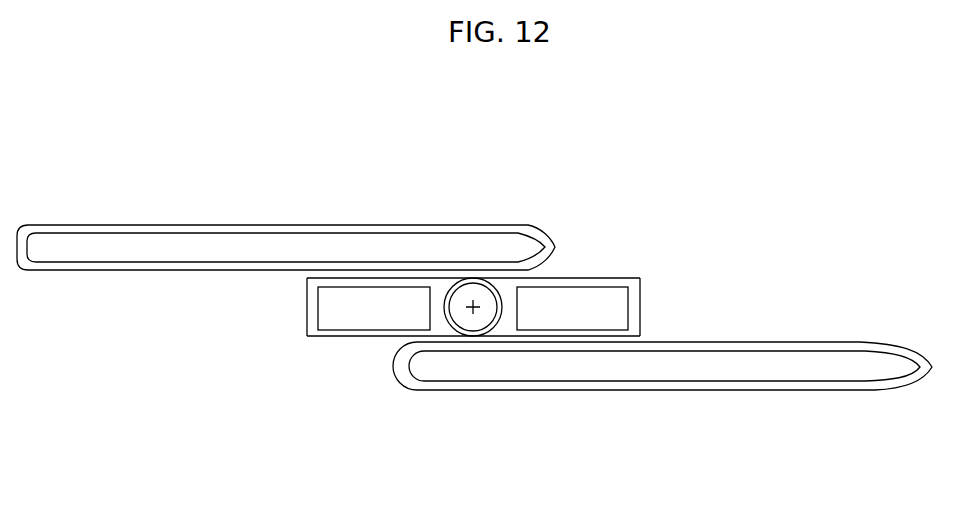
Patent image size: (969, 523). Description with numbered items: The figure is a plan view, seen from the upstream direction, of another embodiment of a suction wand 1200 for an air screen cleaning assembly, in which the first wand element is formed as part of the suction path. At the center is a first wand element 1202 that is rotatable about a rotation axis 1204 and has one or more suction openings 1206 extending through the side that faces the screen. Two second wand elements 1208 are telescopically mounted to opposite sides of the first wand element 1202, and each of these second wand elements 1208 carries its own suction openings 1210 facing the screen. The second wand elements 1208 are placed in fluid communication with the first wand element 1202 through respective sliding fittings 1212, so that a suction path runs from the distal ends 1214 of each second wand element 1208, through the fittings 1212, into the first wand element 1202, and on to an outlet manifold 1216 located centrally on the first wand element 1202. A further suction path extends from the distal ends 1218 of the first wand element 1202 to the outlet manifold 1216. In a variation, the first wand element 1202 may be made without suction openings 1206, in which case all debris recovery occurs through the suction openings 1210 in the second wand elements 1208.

The suction wand 1200 is at (730, 175).
The first wand element 1202 is at (640, 299).
The rotation axis 1204 is at (472, 312).
The suction openings 1206 is at (597, 276).
The second wand elements 1208 is at (249, 247).
The suction openings 1210 is at (133, 227).
The sliding fittings 1212 is at (440, 276).
The distal ends 1214 is at (22, 267).
The outlet manifold 1216 is at (485, 292).
The distal ends 1218 is at (306, 313).